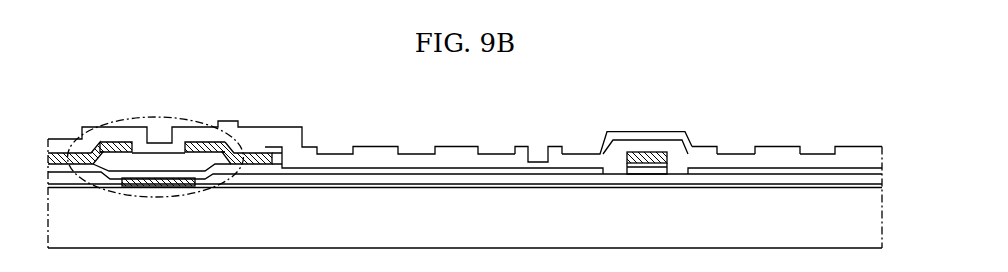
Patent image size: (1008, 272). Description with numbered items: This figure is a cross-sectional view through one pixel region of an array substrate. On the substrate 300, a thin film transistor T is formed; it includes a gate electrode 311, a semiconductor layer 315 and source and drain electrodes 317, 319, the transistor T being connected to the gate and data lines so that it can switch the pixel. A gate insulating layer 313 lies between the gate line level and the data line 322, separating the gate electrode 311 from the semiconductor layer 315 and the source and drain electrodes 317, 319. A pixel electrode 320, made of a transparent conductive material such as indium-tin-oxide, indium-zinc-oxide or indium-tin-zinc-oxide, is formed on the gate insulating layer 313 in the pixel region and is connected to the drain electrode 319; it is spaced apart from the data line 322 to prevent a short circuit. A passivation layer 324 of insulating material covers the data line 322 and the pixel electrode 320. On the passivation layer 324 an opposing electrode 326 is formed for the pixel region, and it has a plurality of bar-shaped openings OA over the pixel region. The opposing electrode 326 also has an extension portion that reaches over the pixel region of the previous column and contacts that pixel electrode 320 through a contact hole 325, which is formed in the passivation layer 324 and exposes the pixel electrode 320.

The substrate 300 is at (845, 237).
The gate electrode 311 is at (147, 186).
The gate insulating layer 313 is at (312, 185).
The semiconductor layer 315 is at (87, 167).
The source electrode 317 is at (114, 141).
The drain electrode 319 is at (206, 141).
The pixel electrode 320 is at (374, 175).
The data line 322 is at (643, 151).
The passivation layer 324 is at (331, 153).
The contact hole 325 is at (544, 151).
The opposing electrode 326 is at (706, 150).
The bar-shaped opening OA is at (412, 141).
The thin film transistor T is at (236, 191).